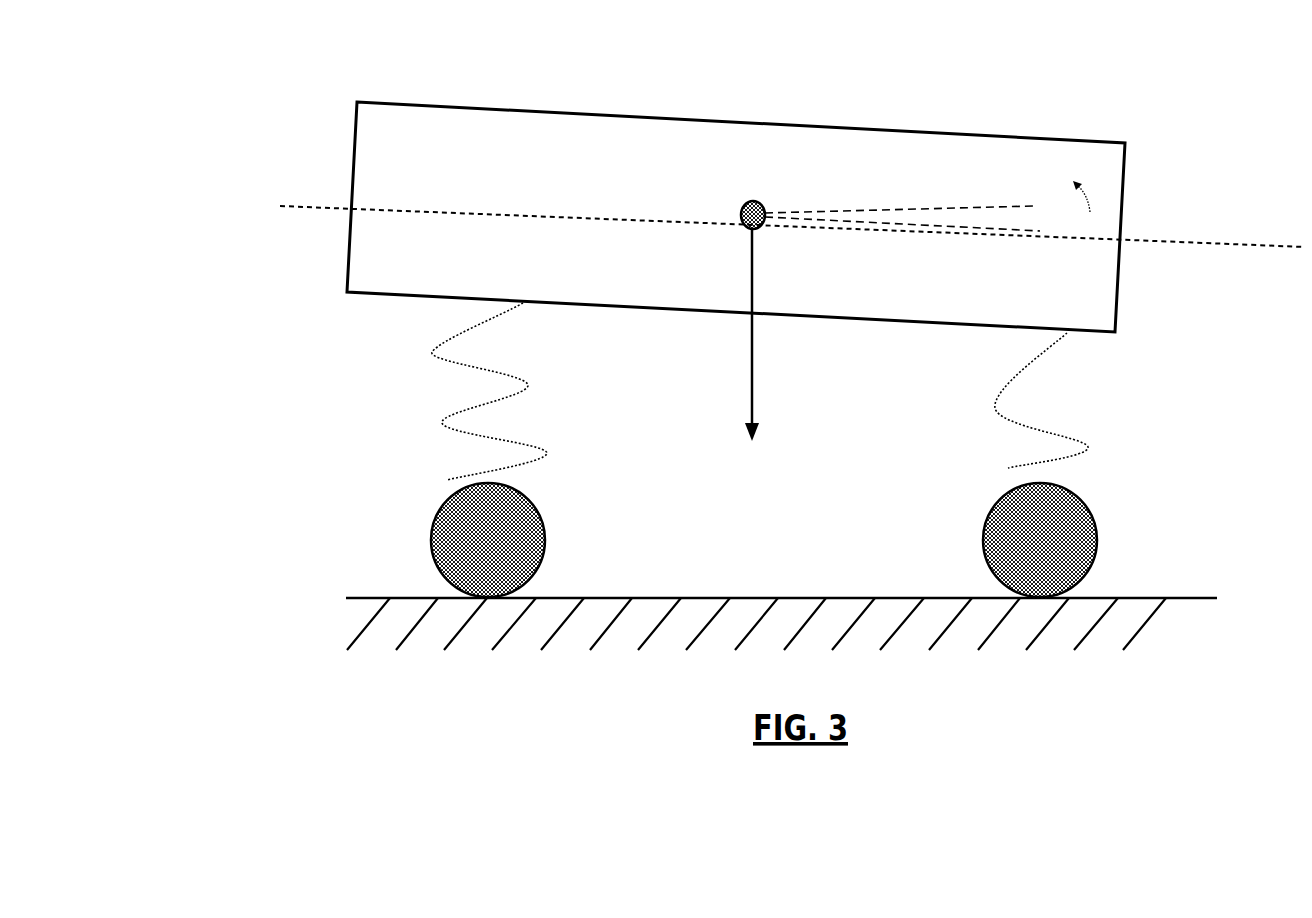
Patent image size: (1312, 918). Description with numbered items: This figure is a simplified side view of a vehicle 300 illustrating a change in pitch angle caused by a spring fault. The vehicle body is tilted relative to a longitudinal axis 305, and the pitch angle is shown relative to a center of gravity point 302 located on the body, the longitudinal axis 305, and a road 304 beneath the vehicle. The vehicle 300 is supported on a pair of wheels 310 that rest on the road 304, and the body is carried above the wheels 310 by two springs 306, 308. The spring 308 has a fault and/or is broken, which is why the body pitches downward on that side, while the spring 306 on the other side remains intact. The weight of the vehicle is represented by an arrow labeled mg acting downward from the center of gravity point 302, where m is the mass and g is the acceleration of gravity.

The vehicle 300 is at (493, 107).
The center of gravity point 302 is at (745, 203).
The road 304 is at (1147, 597).
The longitudinal axis 305 is at (300, 205).
The spring 306 is at (463, 410).
The spring 308 is at (1020, 427).
The wheels 310 is at (433, 523).